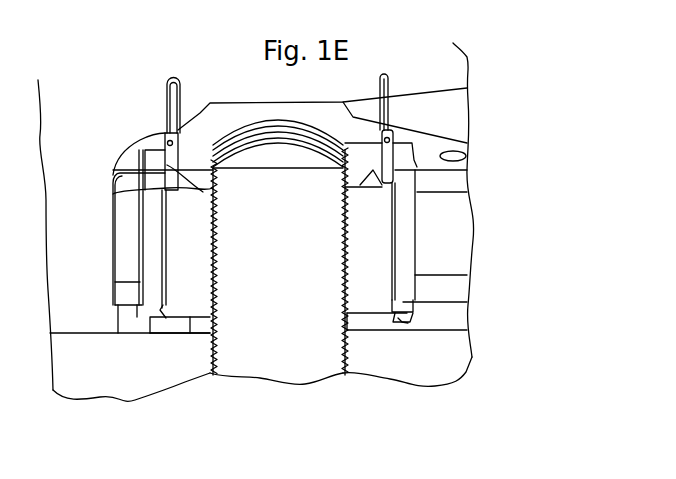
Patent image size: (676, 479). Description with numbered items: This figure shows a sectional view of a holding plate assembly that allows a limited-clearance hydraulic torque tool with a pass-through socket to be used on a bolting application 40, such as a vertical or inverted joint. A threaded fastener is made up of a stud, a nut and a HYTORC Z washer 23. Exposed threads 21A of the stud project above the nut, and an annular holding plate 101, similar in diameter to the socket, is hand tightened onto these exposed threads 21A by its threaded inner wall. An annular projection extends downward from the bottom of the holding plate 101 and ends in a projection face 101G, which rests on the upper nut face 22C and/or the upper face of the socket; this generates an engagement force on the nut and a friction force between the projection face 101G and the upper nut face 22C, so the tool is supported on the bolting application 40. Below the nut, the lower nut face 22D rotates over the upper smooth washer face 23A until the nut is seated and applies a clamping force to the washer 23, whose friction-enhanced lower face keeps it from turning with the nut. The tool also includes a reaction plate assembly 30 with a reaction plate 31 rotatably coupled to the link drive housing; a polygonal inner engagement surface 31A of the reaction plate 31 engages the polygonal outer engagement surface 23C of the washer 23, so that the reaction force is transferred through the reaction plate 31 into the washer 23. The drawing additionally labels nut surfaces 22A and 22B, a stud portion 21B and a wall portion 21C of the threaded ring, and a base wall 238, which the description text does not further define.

The bolting application 40 is at (96, 118).
The ring top surface 21B is at (260, 160).
The projection face 101G is at (210, 197).
The threaded wall 21C is at (215, 267).
The exposed threads 21A is at (340, 172).
The holding plate 101 is at (395, 128).
The polygonal inner engagement surface 31A is at (406, 322).
The reaction plate assembly 30 is at (373, 340).
The base wall 238 is at (360, 333).
The upper nut face 22C is at (115, 173).
The ledge 22B is at (117, 193).
The wall 22A is at (210, 250).
The washer 23 is at (170, 325).
The reaction plate 31 is at (130, 322).
The polygonal outer engagement surface 23C is at (140, 327).
The lower nut face 22D is at (190, 317).
The upper smooth washer face 23A is at (191, 372).